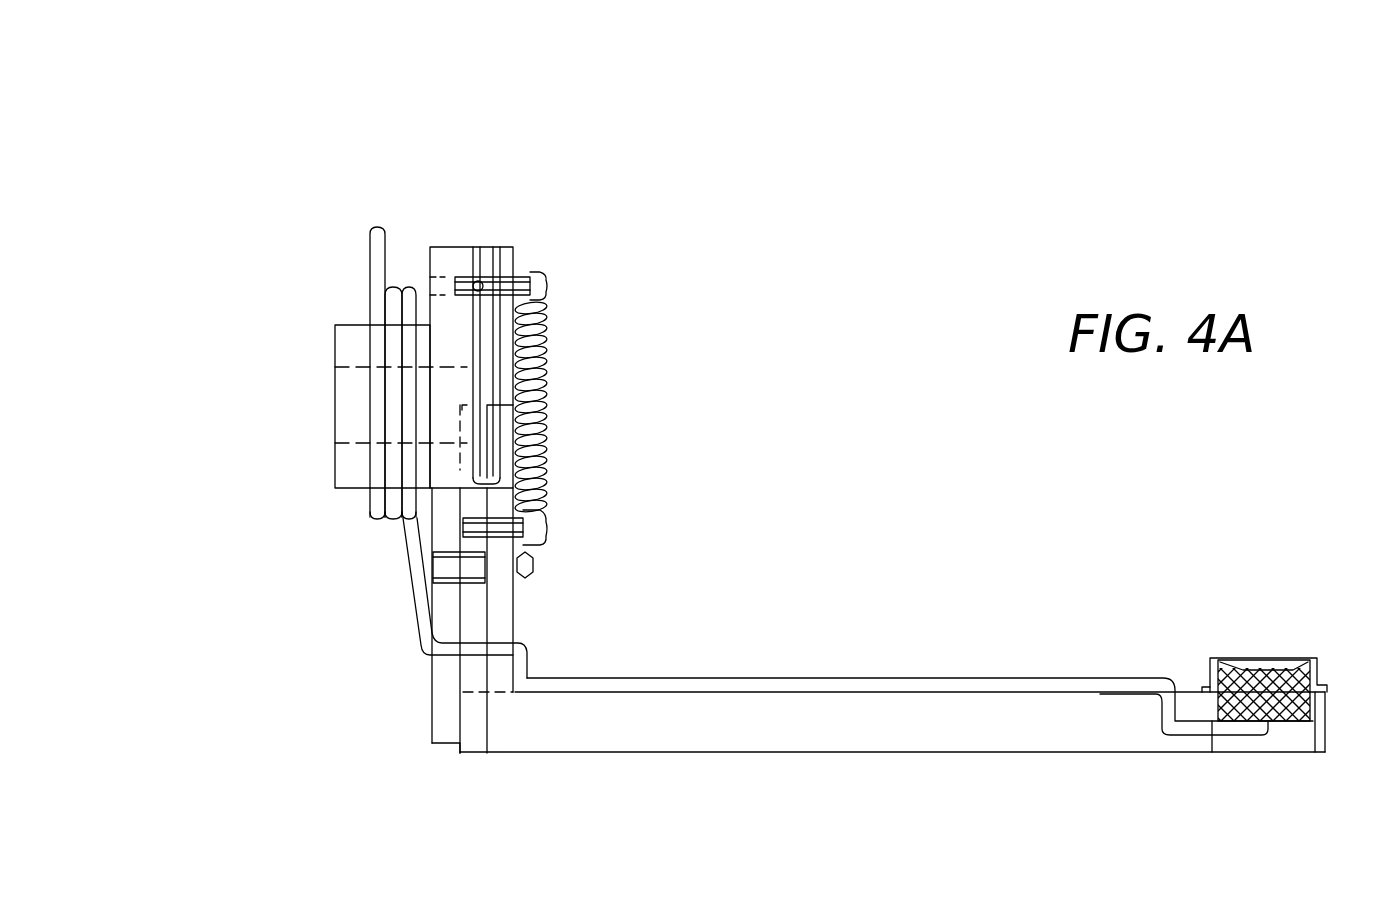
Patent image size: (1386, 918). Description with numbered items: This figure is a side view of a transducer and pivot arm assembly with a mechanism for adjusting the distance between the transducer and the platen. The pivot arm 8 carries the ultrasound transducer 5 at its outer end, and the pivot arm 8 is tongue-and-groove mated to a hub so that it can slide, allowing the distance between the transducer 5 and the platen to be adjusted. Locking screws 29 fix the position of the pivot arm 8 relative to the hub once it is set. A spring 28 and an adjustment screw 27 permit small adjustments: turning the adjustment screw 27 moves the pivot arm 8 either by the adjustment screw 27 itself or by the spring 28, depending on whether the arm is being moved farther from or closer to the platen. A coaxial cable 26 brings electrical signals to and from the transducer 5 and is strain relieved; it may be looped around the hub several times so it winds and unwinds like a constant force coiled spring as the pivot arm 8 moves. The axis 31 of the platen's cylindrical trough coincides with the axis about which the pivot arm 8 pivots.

The transducer 5 is at (1273, 643).
The pivot arm 8 is at (808, 749).
The coaxial cable 26 is at (232, 289).
The adjustment screw 27 is at (642, 428).
The spring 28 is at (736, 358).
The locking screws 29 is at (617, 229).
The axis 31 is at (286, 353).